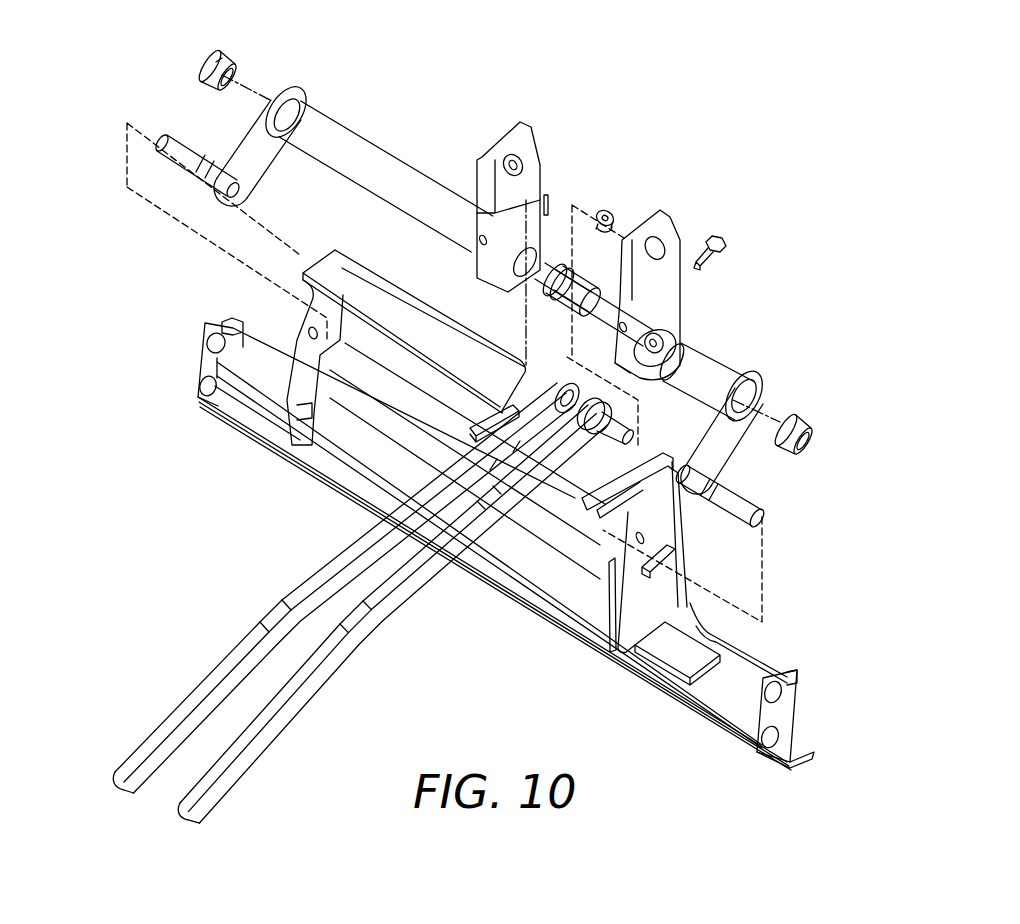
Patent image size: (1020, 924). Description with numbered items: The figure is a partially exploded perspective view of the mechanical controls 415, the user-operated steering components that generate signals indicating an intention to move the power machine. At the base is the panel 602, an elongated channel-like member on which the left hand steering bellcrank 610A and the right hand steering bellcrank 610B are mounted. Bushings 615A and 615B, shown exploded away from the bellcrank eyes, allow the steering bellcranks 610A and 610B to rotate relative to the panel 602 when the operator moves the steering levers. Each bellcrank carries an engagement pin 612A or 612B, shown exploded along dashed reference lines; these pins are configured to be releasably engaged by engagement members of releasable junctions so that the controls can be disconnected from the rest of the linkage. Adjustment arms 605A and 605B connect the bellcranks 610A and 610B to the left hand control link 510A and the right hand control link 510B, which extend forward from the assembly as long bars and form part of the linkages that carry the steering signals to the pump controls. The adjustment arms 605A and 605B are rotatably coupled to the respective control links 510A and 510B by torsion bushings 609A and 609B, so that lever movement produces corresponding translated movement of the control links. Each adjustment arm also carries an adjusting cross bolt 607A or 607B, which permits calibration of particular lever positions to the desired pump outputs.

The mechanical controls 415 is at (632, 78).
The left hand control link 510A is at (223, 662).
The right hand control link 510B is at (280, 733).
The panel 602 is at (737, 645).
The adjustment arm 605A is at (505, 143).
The adjustment arm 605B is at (648, 227).
The adjusting cross bolt 607A is at (547, 200).
The adjusting cross bolt 607B is at (722, 232).
The torsion bushing 609A is at (515, 158).
The torsion bushing 609B is at (606, 212).
The left hand steering bellcrank 610A is at (250, 163).
The right hand steering bellcrank 610B is at (723, 433).
The engagement pin 612A is at (177, 155).
The engagement pin 612B is at (743, 503).
The bushing 615A is at (223, 76).
The bushing 615B is at (822, 420).